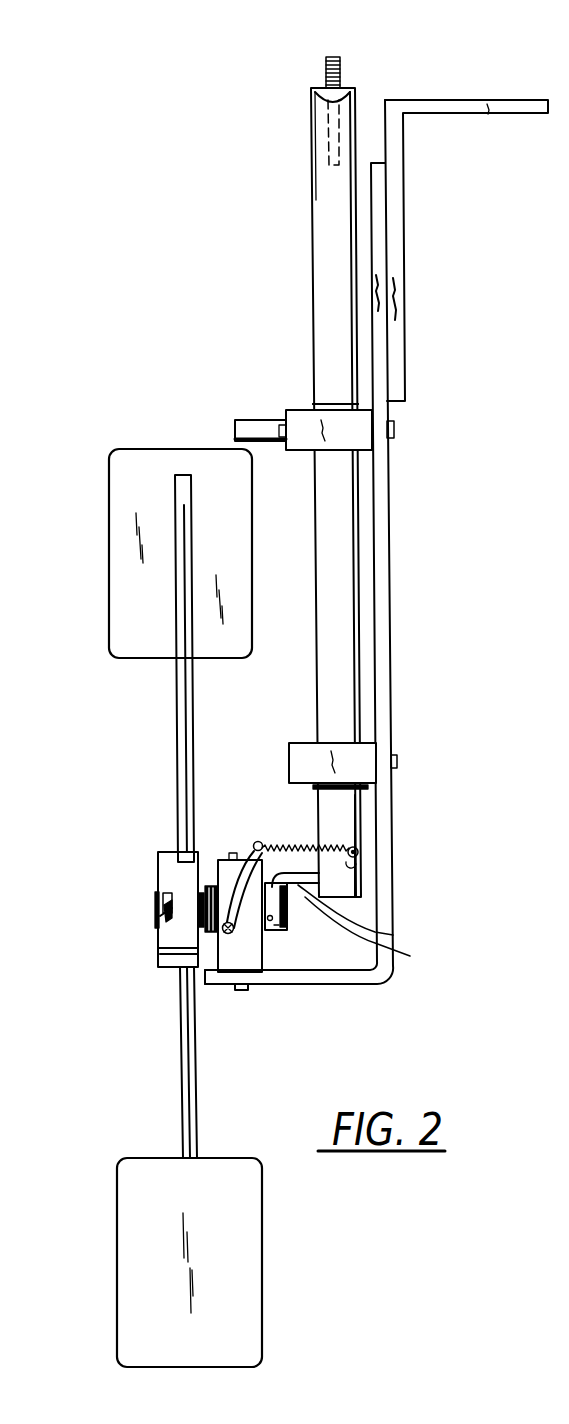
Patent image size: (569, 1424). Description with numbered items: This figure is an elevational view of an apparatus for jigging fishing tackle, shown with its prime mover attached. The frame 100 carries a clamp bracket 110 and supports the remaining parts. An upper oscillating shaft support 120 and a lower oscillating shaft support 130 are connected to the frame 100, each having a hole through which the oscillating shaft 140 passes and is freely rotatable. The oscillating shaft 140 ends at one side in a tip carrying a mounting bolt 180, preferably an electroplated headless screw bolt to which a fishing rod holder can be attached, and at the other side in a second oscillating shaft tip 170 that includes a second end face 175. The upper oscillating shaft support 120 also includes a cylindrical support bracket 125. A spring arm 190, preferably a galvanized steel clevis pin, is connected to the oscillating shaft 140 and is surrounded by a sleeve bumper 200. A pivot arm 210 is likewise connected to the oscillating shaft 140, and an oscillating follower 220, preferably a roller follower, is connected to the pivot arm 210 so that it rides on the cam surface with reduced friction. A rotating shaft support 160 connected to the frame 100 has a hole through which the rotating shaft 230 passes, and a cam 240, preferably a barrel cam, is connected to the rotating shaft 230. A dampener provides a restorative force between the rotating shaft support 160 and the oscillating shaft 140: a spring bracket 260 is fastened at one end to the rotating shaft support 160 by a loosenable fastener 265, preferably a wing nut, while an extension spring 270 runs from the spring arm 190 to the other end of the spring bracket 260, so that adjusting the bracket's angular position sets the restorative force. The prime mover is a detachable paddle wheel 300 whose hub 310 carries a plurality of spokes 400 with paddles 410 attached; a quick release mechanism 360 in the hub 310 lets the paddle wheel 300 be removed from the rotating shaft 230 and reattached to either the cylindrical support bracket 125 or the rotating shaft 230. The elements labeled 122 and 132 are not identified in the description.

The frame 100 is at (393, 503).
The clamp bracket 110 is at (518, 64).
The upper oscillating shaft support 120 is at (300, 448).
The clamp collar 122 is at (311, 406).
The cylindrical support bracket 125 is at (252, 420).
The lower oscillating shaft support 130 is at (298, 748).
The stop bar 132 is at (366, 787).
The oscillating shaft 140 is at (327, 680).
The rotating shaft support 160 is at (229, 963).
The second oscillating shaft tip 170 is at (362, 822).
The second end face 175 is at (378, 910).
The mounting bolt 180 is at (340, 58).
The spring arm 190 is at (358, 850).
The sleeve bumper 200 is at (340, 873).
The pivot arm 210 is at (393, 935).
The oscillating follower 220 is at (410, 956).
The rotating shaft 230 is at (155, 903).
The cam 240 is at (290, 932).
The spring bracket 260 is at (255, 847).
The loosenable fastener 265 is at (230, 932).
The spring 270 is at (283, 847).
The detachable paddle wheel 300 is at (108, 1275).
The hub 310 is at (163, 852).
The quick release mechanism 360 is at (162, 926).
The spokes 400 is at (176, 701).
The paddles 410 is at (135, 524).